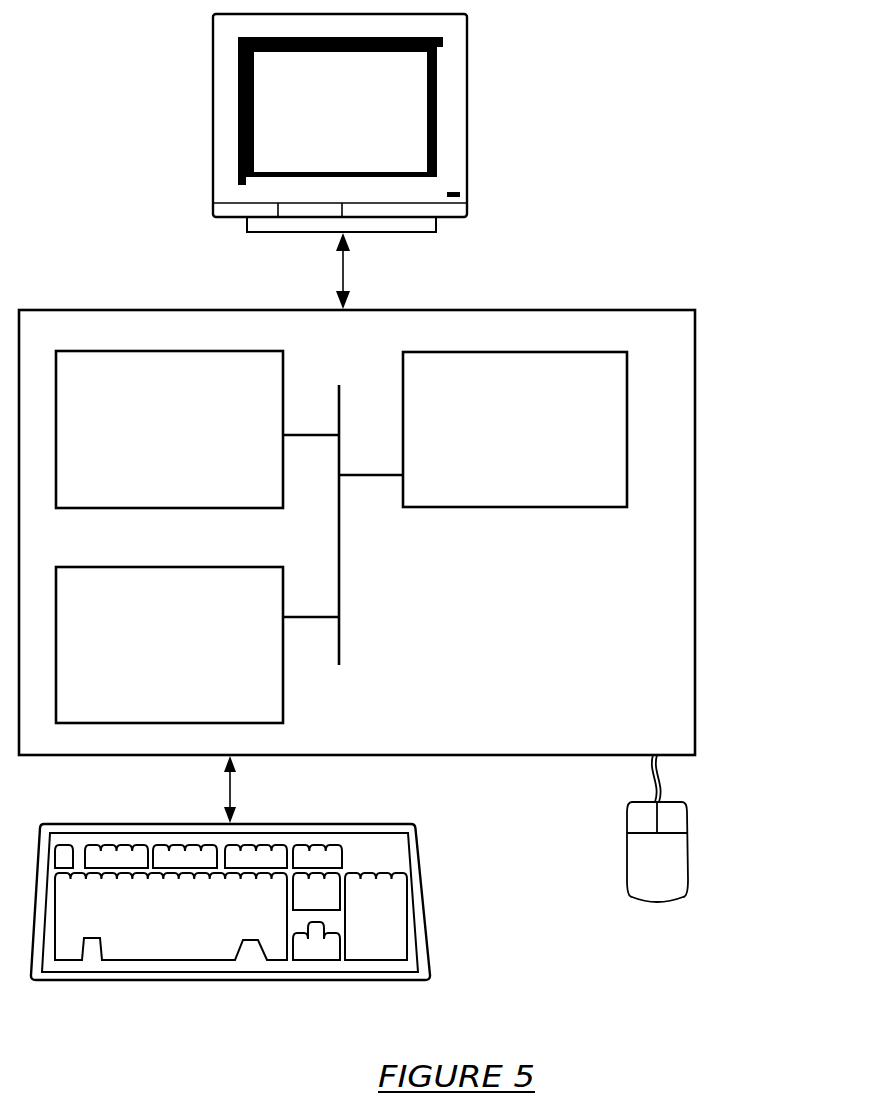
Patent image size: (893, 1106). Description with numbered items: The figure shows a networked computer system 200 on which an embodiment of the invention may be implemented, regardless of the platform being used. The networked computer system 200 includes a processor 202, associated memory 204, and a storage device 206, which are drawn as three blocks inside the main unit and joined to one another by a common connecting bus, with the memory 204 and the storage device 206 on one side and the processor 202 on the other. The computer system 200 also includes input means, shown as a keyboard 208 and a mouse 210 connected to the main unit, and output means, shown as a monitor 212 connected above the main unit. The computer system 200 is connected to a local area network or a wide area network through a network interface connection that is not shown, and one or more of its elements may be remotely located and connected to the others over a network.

The networked computer system 200 is at (707, 170).
The processor 202 is at (553, 442).
The memory 204 is at (191, 442).
The storage device 206 is at (188, 657).
The keyboard 208 is at (183, 941).
The mouse 210 is at (691, 856).
The monitor 212 is at (363, 129).